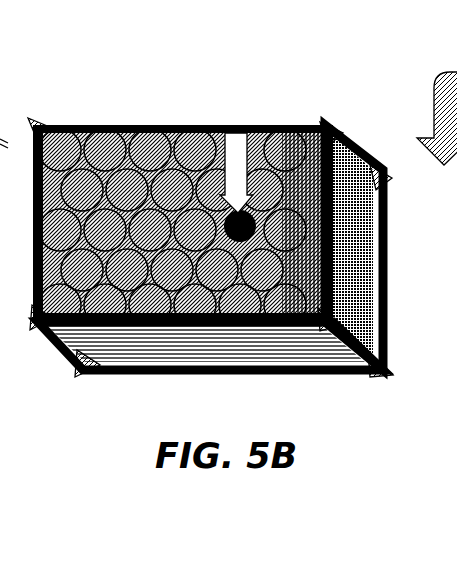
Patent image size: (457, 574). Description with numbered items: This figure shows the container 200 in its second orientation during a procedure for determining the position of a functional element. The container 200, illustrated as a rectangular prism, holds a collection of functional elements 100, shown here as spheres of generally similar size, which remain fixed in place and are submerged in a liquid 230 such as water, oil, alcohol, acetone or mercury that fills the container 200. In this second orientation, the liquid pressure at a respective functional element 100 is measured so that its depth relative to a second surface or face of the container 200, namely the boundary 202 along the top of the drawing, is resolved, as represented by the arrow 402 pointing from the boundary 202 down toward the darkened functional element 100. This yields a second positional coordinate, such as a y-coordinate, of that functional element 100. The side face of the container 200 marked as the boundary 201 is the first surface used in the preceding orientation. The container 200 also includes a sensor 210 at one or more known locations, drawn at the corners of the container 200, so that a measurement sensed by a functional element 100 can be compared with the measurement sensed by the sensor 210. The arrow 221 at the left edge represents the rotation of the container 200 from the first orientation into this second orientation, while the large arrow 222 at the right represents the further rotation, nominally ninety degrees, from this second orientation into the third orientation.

The functional elements 100 is at (70, 252).
The container 200 is at (233, 214).
The boundary 201 is at (337, 270).
The boundary 202 is at (272, 127).
The sensor 210 is at (378, 182).
The arrow 221 is at (13, 84).
The arrow 222 is at (449, 82).
The liquid 230 is at (300, 127).
The arrow 402 is at (235, 168).